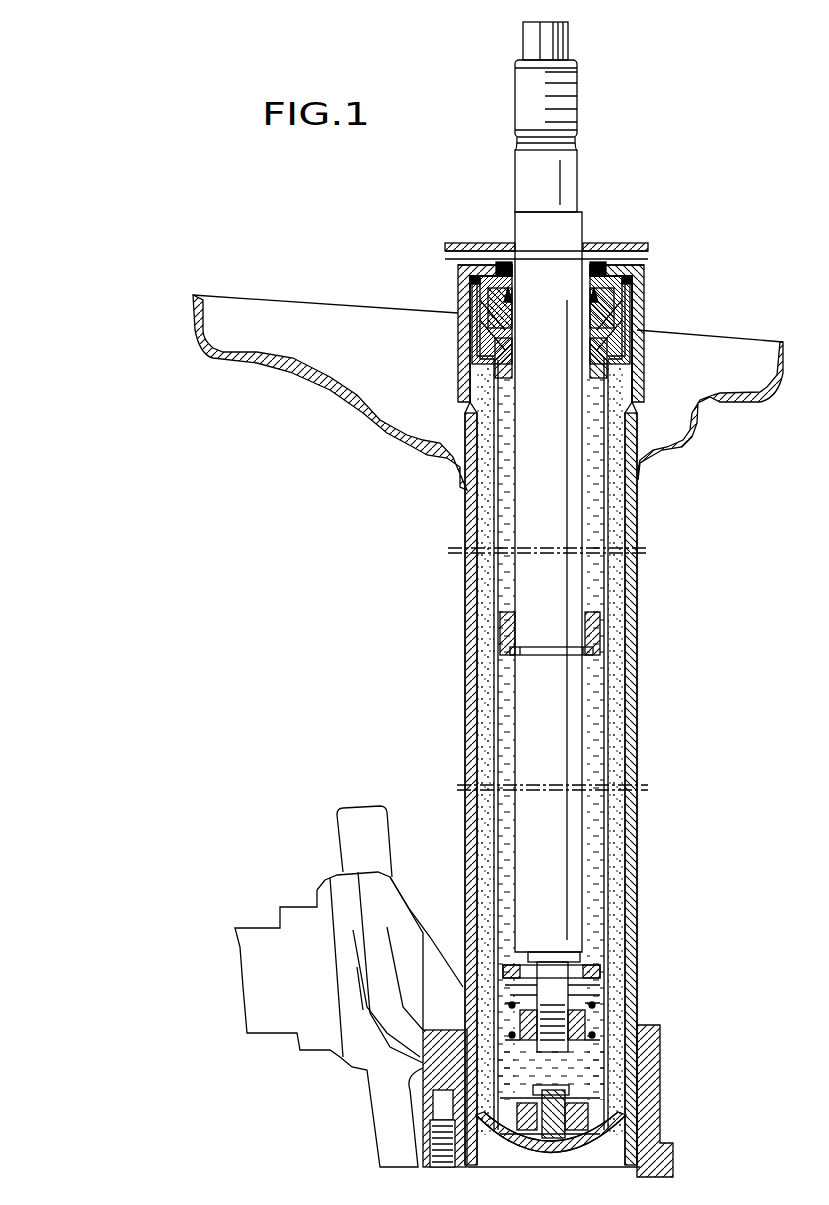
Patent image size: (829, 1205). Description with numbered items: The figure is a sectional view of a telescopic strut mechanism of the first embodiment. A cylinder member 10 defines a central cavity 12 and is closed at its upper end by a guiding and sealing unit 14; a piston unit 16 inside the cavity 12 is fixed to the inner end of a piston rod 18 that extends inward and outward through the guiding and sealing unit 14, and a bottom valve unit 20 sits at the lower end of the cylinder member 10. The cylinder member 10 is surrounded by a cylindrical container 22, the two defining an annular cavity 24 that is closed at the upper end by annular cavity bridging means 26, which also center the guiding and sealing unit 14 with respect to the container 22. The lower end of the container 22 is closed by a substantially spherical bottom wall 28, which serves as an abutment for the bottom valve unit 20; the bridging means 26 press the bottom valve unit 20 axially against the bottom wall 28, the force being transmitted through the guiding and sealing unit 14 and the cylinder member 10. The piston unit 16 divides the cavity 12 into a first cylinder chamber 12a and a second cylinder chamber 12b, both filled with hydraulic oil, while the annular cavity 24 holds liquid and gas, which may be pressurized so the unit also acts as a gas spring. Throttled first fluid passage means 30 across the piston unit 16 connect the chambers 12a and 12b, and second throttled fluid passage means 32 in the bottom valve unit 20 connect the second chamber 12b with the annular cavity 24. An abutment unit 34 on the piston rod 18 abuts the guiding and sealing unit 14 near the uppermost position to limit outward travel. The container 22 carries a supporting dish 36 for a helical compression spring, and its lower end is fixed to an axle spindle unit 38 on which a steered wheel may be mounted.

The cylinder member 10 is at (612, 675).
The central cavity 12 is at (593, 813).
The first cylinder chamber 12a is at (503, 580).
The second cylinder chamber 12b is at (593, 1073).
The guiding and sealing unit 14 is at (630, 291).
The piston unit 16 is at (600, 988).
The piston rod 18 is at (537, 712).
The bottom valve unit 20 is at (597, 1122).
The cylindrical container 22 is at (638, 562).
The annular cavity 24 is at (620, 768).
The annular cavity bridging means 26 is at (465, 278).
The bottom wall 28 is at (653, 1160).
The first fluid passage means 30 is at (470, 987).
The second fluid passage means 32 is at (430, 1117).
The abutment unit 34 is at (606, 615).
The supporting dish 36 is at (703, 425).
The axle spindle unit 38 is at (377, 1077).